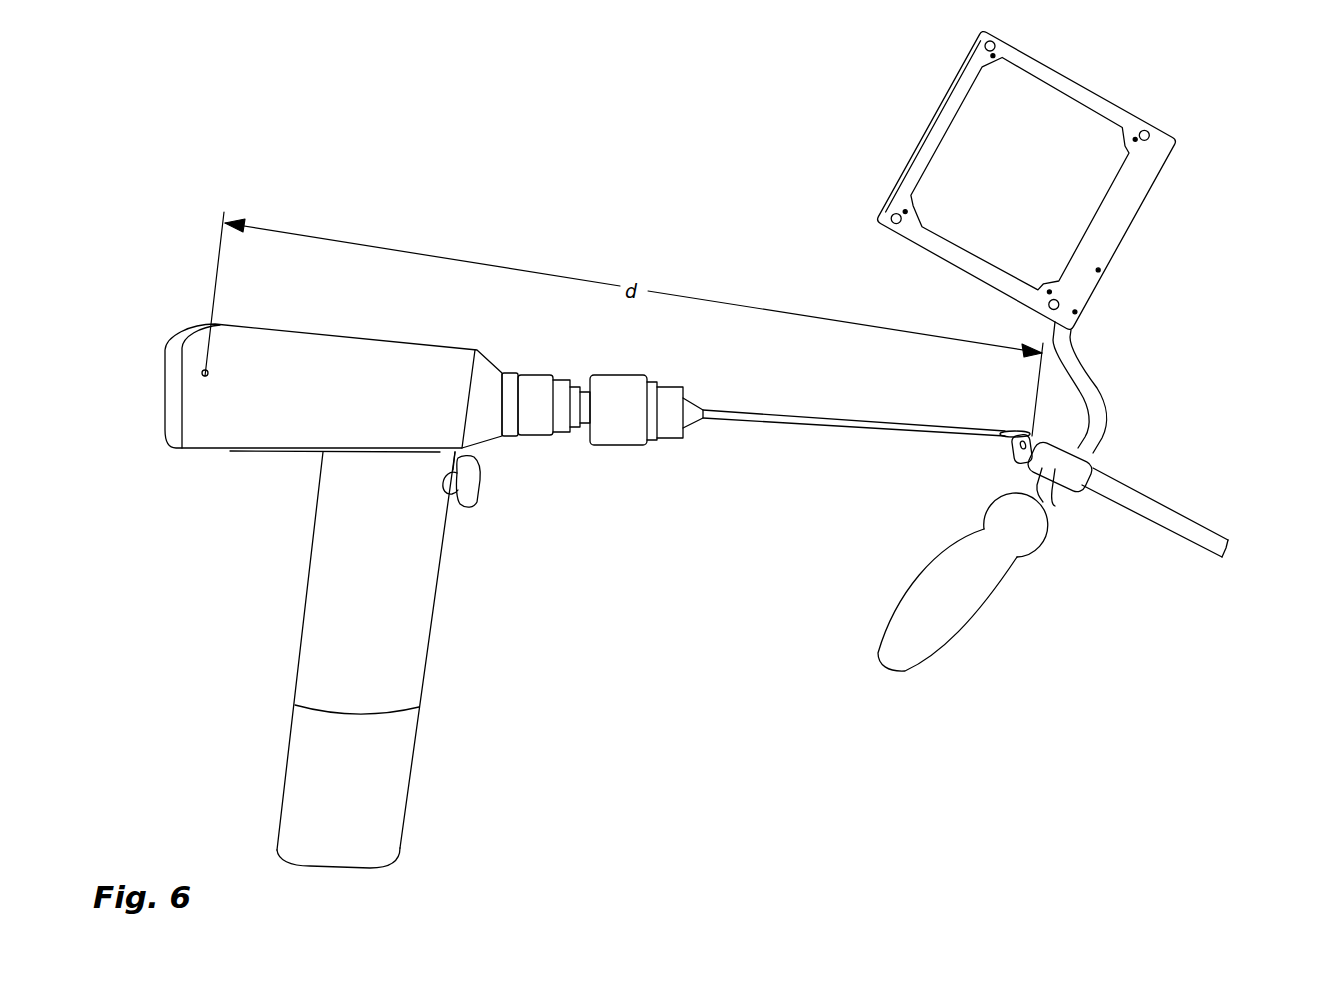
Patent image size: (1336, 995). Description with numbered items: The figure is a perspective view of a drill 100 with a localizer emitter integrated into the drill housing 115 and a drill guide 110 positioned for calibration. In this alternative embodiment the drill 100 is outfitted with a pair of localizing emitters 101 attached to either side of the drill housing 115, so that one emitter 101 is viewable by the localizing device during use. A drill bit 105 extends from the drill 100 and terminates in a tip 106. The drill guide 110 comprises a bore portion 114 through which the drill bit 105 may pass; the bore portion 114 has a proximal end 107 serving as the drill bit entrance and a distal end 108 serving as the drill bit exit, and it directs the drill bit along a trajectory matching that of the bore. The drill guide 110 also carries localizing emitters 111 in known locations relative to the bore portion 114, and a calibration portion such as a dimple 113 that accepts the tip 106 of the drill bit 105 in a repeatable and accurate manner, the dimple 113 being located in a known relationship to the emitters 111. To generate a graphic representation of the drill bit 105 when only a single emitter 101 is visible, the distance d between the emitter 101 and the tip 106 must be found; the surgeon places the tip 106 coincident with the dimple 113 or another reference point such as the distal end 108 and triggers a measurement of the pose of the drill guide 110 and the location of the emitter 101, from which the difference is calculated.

The drill 100 is at (404, 596).
The localizing emitter 101 is at (202, 374).
The drill bit 105 is at (790, 432).
The tip 106 is at (1008, 434).
The proximal end 107 is at (1030, 436).
The distal end 108 is at (1233, 547).
The drill guide 110 is at (1126, 390).
The localizing emitters 111 is at (1139, 134).
The dimple 113 is at (1030, 432).
The bore portion 114 is at (1020, 447).
The drill housing 115 is at (322, 408).